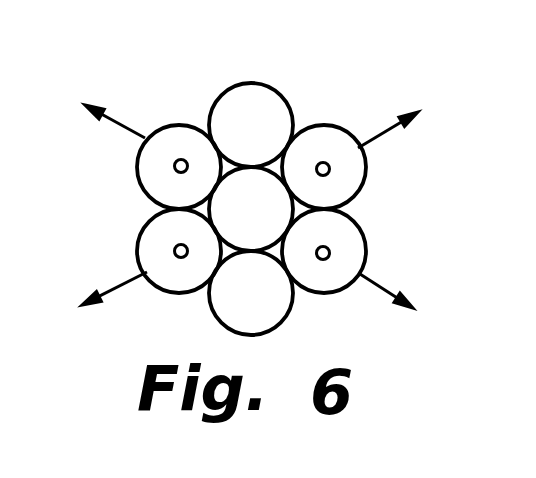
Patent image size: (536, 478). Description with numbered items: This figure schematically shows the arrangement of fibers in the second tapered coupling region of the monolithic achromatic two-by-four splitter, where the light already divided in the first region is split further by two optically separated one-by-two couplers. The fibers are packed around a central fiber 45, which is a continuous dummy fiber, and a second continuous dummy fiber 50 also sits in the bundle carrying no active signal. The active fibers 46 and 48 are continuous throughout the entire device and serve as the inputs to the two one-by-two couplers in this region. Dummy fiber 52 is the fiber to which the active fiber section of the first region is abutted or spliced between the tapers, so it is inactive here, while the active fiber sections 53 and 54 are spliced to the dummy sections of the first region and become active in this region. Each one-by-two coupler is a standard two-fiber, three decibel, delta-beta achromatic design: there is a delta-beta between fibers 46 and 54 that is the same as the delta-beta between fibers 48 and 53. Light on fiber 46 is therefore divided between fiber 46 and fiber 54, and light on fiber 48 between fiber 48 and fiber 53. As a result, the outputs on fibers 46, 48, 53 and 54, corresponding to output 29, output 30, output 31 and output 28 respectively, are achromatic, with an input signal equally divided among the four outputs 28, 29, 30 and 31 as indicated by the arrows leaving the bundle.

The output terminal 28 is at (107, 289).
The output terminal 29 is at (118, 122).
The output terminal 30 is at (367, 135).
The output terminal 31 is at (380, 292).
The central fiber 45 is at (272, 223).
The active fiber 46 is at (140, 168).
The active fiber 48 is at (365, 178).
The dummy fiber 50 is at (210, 310).
The dummy fiber 52 is at (230, 87).
The active fiber section 53 is at (363, 247).
The active fiber section 54 is at (138, 242).